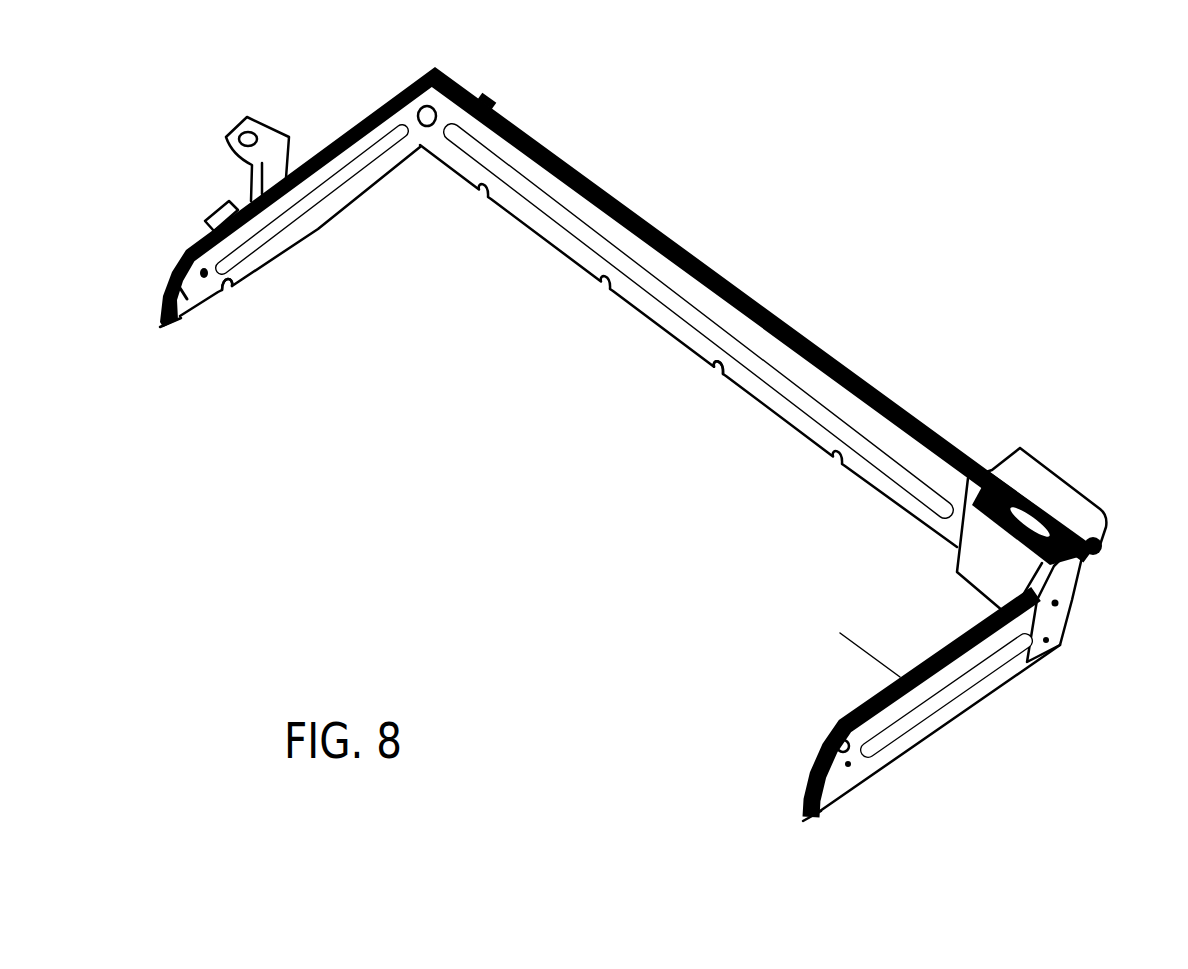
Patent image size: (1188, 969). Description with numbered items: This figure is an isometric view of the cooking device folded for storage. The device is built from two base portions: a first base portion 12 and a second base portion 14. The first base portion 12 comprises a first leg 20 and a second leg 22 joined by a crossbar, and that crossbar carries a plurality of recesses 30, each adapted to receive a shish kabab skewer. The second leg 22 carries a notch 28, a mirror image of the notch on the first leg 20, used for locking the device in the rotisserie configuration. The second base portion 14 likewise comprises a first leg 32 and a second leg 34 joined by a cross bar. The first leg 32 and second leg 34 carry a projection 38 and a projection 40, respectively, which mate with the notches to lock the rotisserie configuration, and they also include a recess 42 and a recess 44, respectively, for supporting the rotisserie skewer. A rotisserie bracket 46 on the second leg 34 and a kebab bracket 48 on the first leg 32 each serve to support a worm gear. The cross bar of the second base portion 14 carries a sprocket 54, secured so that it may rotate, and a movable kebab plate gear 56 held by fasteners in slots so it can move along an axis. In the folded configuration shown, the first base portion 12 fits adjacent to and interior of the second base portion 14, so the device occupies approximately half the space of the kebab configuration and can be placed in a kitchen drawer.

The first base portion 12 is at (677, 327).
The second base portion 14 is at (733, 282).
The first leg 20 is at (913, 670).
The second leg 22 is at (313, 215).
The notch 28 is at (220, 299).
The recesses 30 is at (718, 375).
The first leg 32 is at (940, 702).
The second leg 34 is at (395, 97).
The projection 38 is at (804, 820).
The projection 40 is at (169, 331).
The recess 42 is at (832, 746).
The recess 44 is at (186, 249).
The rotisserie bracket 46 is at (274, 146).
The kebab bracket 48 is at (1087, 508).
The sprocket 54 is at (1083, 582).
The kebab plate gear 56 is at (878, 388).